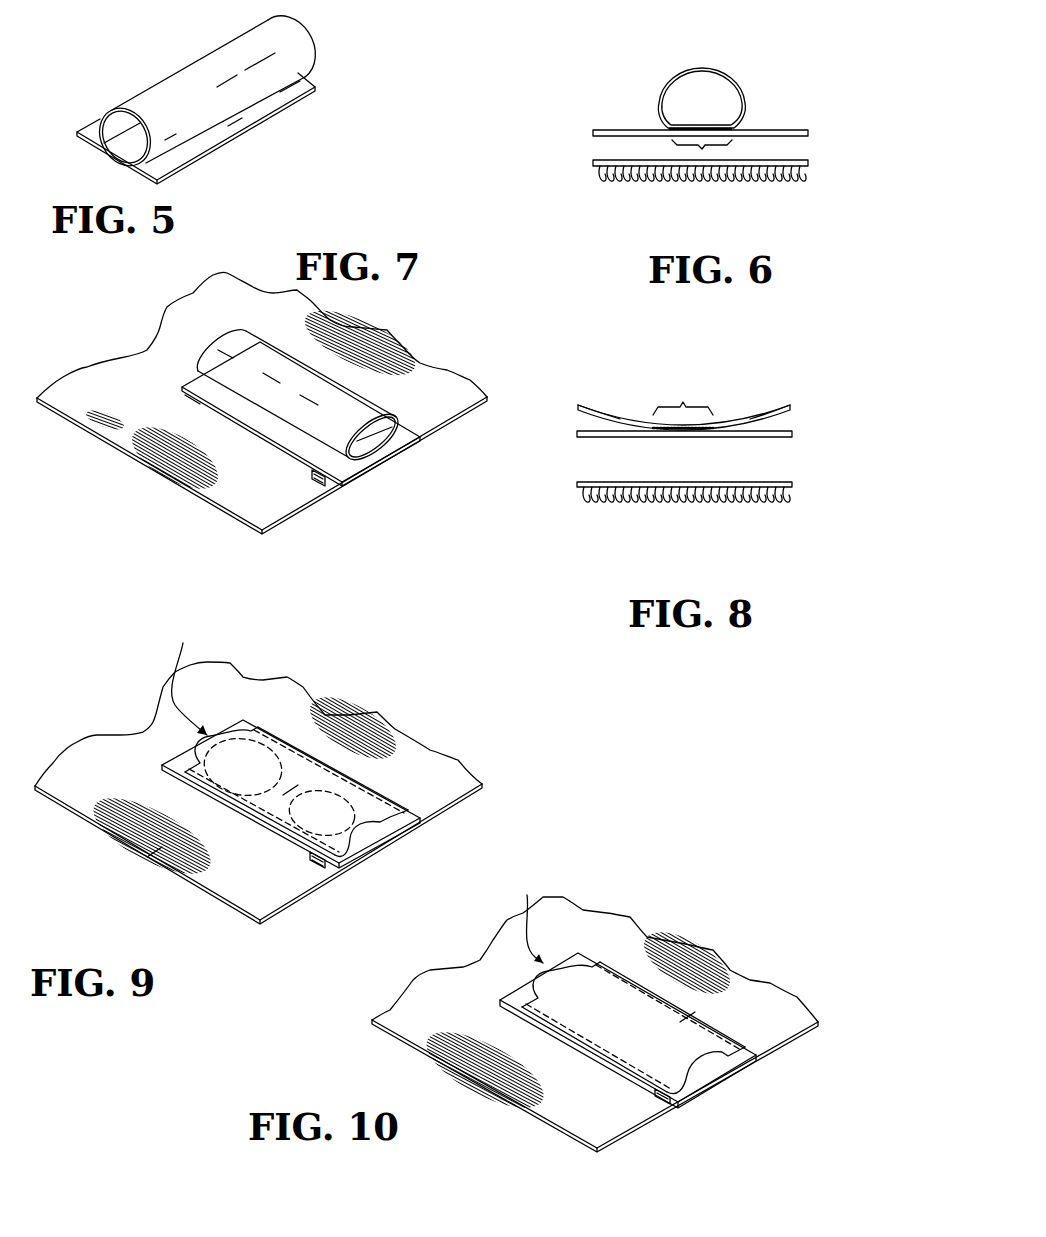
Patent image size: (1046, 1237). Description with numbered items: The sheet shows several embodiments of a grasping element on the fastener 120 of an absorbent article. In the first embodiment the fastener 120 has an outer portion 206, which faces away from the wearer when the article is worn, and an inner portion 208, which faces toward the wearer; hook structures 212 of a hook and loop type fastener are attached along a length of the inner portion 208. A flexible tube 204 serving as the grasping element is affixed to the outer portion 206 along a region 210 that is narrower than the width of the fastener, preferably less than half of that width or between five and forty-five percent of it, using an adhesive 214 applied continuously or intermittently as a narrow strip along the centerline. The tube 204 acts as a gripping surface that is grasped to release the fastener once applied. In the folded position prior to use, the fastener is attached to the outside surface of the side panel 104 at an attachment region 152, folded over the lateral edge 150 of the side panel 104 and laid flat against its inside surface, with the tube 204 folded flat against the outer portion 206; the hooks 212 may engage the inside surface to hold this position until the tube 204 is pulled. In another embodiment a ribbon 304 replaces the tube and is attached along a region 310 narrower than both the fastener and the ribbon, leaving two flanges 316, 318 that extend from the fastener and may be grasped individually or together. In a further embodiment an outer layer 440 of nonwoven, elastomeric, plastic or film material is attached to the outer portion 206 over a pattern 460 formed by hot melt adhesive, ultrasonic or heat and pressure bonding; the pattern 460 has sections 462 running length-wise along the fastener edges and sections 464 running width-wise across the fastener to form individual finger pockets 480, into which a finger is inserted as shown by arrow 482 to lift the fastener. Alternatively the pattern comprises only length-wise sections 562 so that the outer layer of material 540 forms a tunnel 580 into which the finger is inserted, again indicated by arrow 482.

In FIG. 7, the side panel 104 is at (187, 487).
In FIG. 9, the side panel 104 is at (244, 880).
In FIG. 10, the side panel 104 is at (500, 1093).
In FIG. 5, the fastener 120 is at (233, 122).
In FIG. 7, the fastener 120 is at (193, 400).
In FIG. 7, the lateral edge 150 is at (293, 517).
In FIG. 9, the lateral edge 150 is at (460, 803).
In FIG. 10, the lateral edge 150 is at (627, 1140).
In FIG. 7, the attachment region 152 is at (320, 487).
In FIG. 9, the attachment region 152 is at (318, 873).
In FIG. 10, the attachment region 152 is at (657, 1102).
In FIG. 5, the flexible tube 204 is at (193, 88).
In FIG. 6, the flexible tube 204 is at (703, 67).
In FIG. 7, the flexible tube 204 is at (368, 410).
In FIG. 5, the outer portion 206 is at (285, 93).
In FIG. 6, the outer portion 206 is at (610, 130).
In FIG. 7, the outer portion 206 is at (193, 387).
In FIG. 8, the outer portion 206 is at (787, 430).
In FIG. 9, the outer portion 206 is at (167, 763).
In FIG. 10, the outer portion 206 is at (493, 1007).
In FIG. 5, the inner portion 208 is at (177, 168).
In FIG. 6, the inner portion 208 is at (597, 135).
In FIG. 8, the inner portion 208 is at (588, 437).
In FIG. 6, the region 210 is at (702, 150).
In FIG. 6, the hook structures 212 is at (740, 180).
In FIG. 8, the hook structures 212 is at (710, 507).
In FIG. 6, the adhesive 214 is at (743, 128).
In FIG. 8, the adhesive 214 is at (683, 430).
In FIG. 8, the ribbon 304 is at (727, 417).
In FIG. 8, the region 310 is at (683, 400).
In FIG. 8, the flange 316 is at (770, 407).
In FIG. 8, the flange 318 is at (597, 410).
In FIG. 9, the outer layer 440 is at (339, 806).
In FIG. 9, the pattern of attachment 460 is at (154, 852).
In FIG. 10, the pattern of attachment 460 is at (687, 1017).
In FIG. 9, the sections 462 is at (300, 725).
In FIG. 9, the sections 464 is at (290, 790).
In FIG. 9, the finger pocket 480 is at (238, 752).
In FIG. 9, the arrow 482 is at (175, 660).
In FIG. 10, the arrow 482 is at (527, 895).
In FIG. 10, the outer layer of material 540 is at (737, 1070).
In FIG. 10, the sections 562 is at (577, 1030).
In FIG. 10, the tunnel 580 is at (710, 1092).